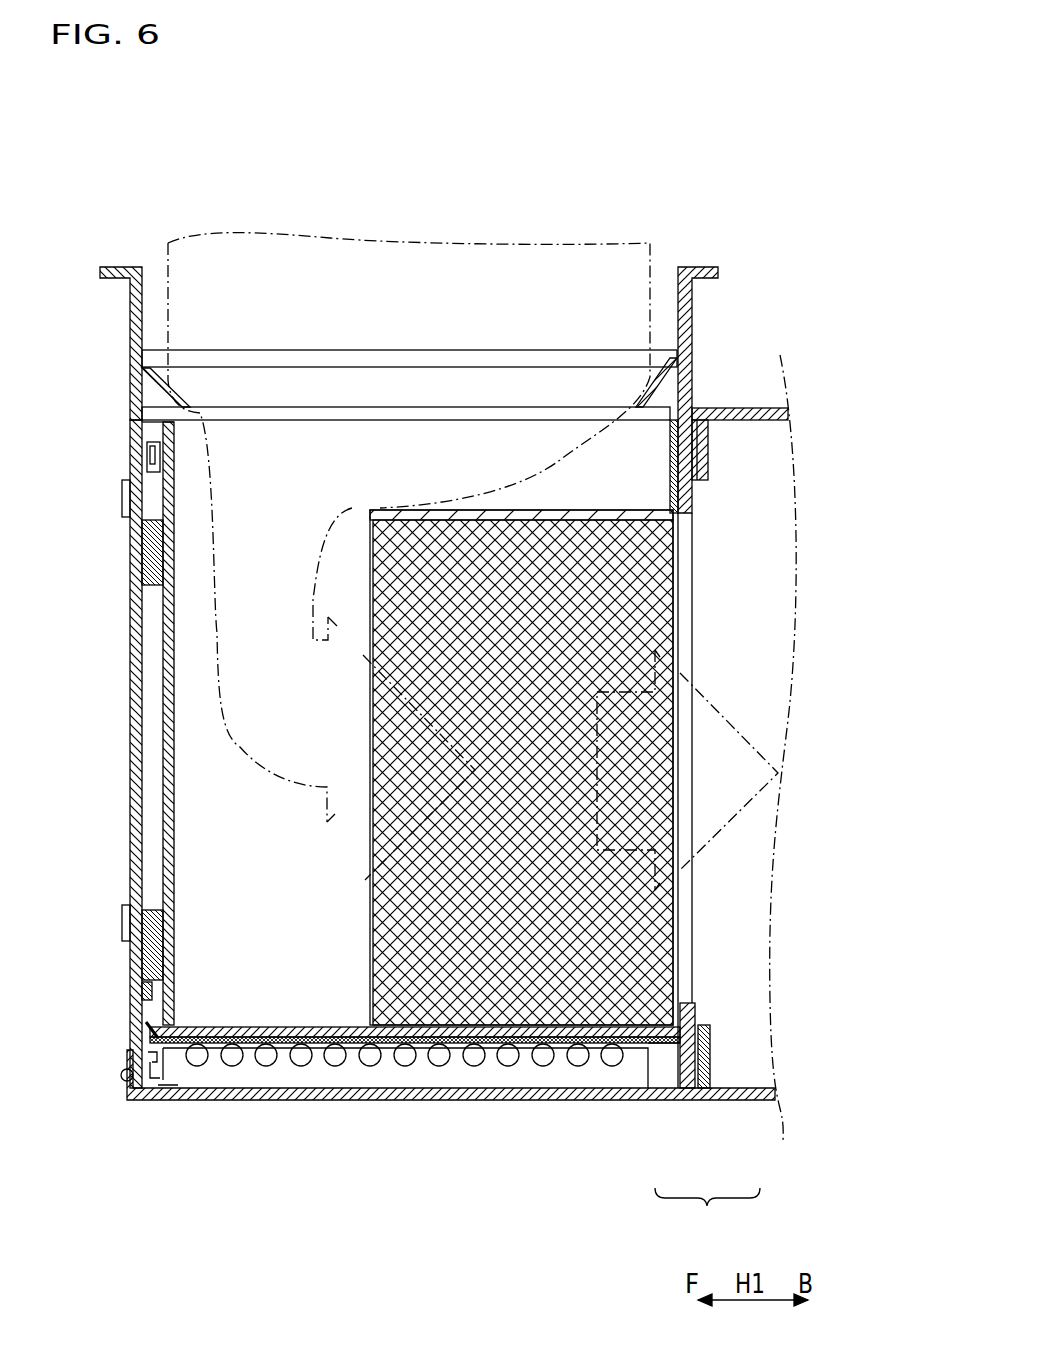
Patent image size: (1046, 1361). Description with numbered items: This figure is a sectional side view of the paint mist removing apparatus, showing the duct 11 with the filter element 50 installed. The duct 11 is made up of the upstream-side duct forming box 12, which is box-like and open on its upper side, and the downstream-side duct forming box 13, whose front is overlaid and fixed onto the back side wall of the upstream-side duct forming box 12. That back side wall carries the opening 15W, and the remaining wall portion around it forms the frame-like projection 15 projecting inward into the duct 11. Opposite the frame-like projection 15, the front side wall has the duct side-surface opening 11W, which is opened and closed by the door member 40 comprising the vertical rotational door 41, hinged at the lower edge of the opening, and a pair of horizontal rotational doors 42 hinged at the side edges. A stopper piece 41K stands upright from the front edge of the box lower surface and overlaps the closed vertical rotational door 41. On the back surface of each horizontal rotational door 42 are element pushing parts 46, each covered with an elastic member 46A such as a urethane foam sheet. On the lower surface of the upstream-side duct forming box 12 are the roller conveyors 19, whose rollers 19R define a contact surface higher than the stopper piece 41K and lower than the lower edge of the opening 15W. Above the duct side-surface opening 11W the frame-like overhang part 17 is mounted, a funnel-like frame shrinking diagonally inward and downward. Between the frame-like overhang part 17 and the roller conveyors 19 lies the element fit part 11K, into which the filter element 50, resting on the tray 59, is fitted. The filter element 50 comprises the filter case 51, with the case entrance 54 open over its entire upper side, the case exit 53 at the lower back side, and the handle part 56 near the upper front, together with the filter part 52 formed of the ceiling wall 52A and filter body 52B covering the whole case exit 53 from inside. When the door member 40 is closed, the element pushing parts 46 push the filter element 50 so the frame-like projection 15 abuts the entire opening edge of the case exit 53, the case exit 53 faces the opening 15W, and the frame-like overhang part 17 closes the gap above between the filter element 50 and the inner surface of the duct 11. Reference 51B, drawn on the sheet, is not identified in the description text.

The filter element 50 is at (552, 418).
The frame-like overhang part 17 is at (660, 394).
The case entrance 54 is at (178, 408).
The duct side-surface opening 11W is at (131, 432).
The door member 40 is at (130, 790).
The handle part 56 is at (150, 460).
The element pushing part 46 is at (144, 558).
The elastic member 46A is at (160, 585).
The element fit part 11K is at (166, 622).
The horizontal rotational door 42 is at (150, 986).
The vertical rotational door 41 is at (135, 1012).
The stopper piece 41K is at (152, 1075).
The filter case 51 is at (177, 987).
The tray 59 is at (252, 1035).
The roller conveyor 19 is at (333, 1080).
The roller 19R is at (441, 1066).
The filter part 52 is at (622, 852).
The ceiling wall 52A is at (648, 535).
The filter body 52B is at (640, 598).
The frame-like projection 15 is at (688, 494).
The opening 15W is at (688, 520).
The upstream-side duct forming box 12 is at (677, 1100).
The downstream-side duct forming box 13 is at (748, 1100).
The duct 11 is at (707, 1212).
The case exit 53 is at (688, 976).
The support rear portion 51B is at (688, 1016).